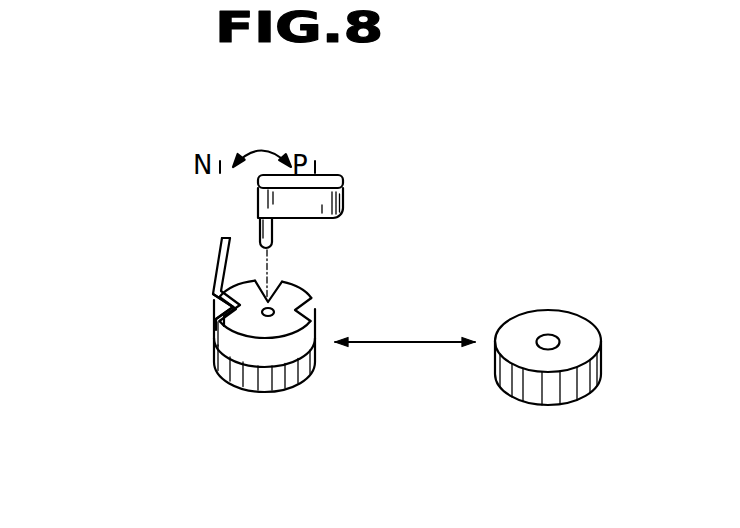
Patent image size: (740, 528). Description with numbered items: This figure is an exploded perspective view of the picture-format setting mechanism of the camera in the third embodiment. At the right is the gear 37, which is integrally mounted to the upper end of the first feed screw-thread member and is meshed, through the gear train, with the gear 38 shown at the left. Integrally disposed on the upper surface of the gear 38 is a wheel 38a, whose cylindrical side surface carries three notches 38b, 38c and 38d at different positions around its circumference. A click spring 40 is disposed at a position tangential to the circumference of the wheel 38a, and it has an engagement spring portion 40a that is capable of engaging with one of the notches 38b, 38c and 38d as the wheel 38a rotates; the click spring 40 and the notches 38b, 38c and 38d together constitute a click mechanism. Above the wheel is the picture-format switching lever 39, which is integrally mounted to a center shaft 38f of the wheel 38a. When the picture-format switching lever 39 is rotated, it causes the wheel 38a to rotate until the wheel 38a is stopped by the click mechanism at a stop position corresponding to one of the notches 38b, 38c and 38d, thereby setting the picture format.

The gear 37 is at (582, 335).
The gear 38 is at (271, 351).
The wheel 38a is at (300, 352).
The notch 38b is at (236, 320).
The notch 38c is at (277, 275).
The notch 38d is at (312, 305).
The center shaft 38f is at (260, 321).
The picture-format switching lever 39 is at (345, 198).
The click spring 40 is at (218, 255).
The engagement spring portion 40a is at (213, 303).